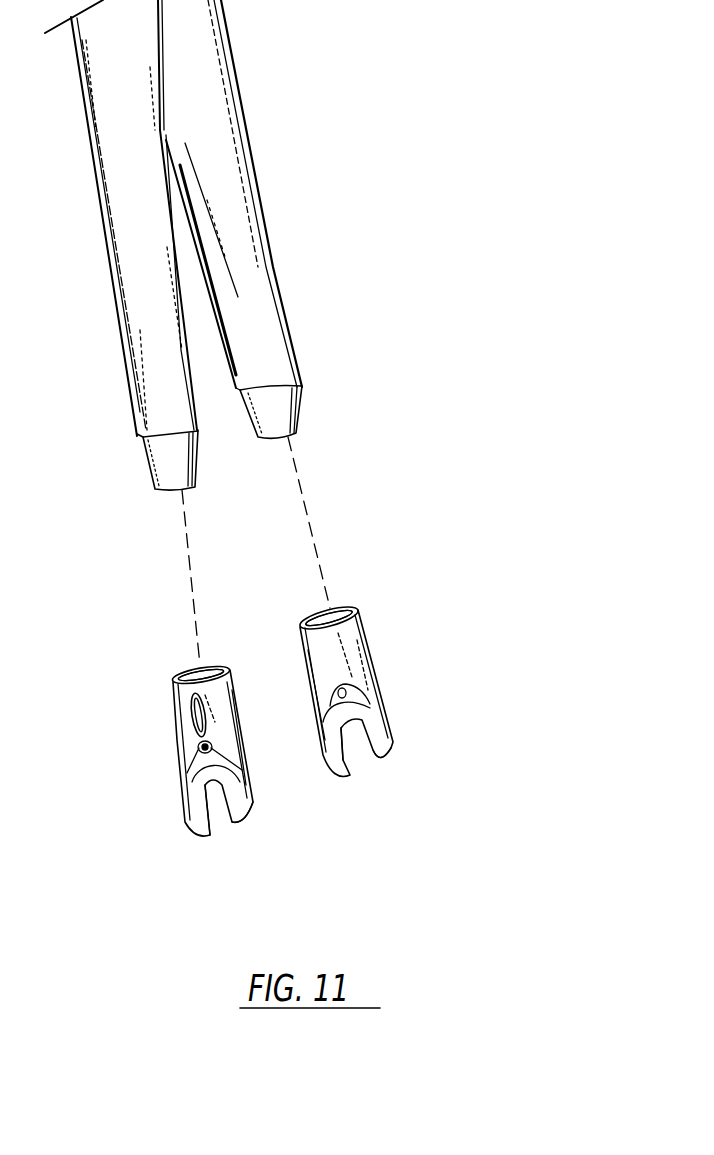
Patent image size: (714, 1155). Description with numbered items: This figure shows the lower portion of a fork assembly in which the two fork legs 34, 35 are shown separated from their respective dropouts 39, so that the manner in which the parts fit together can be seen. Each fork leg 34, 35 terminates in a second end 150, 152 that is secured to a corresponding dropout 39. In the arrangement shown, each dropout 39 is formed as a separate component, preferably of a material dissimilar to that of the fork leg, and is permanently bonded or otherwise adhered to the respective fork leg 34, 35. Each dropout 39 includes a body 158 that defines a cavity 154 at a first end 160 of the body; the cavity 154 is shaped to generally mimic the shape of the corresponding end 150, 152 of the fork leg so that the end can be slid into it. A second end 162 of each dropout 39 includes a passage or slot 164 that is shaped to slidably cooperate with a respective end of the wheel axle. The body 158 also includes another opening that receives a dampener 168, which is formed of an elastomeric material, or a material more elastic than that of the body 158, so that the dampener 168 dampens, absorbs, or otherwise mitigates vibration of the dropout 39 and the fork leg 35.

The fork leg 34 is at (135, 280).
The fork leg 35 is at (256, 271).
The second end 150 is at (300, 366).
The second end 152 is at (141, 438).
The dropout 39 is at (190, 707).
The cavity 154 is at (219, 665).
The body 158 is at (315, 655).
The first end 160 is at (185, 688).
The second end 162 is at (252, 808).
The slot 164 is at (212, 830).
The dampener 168 is at (192, 722).